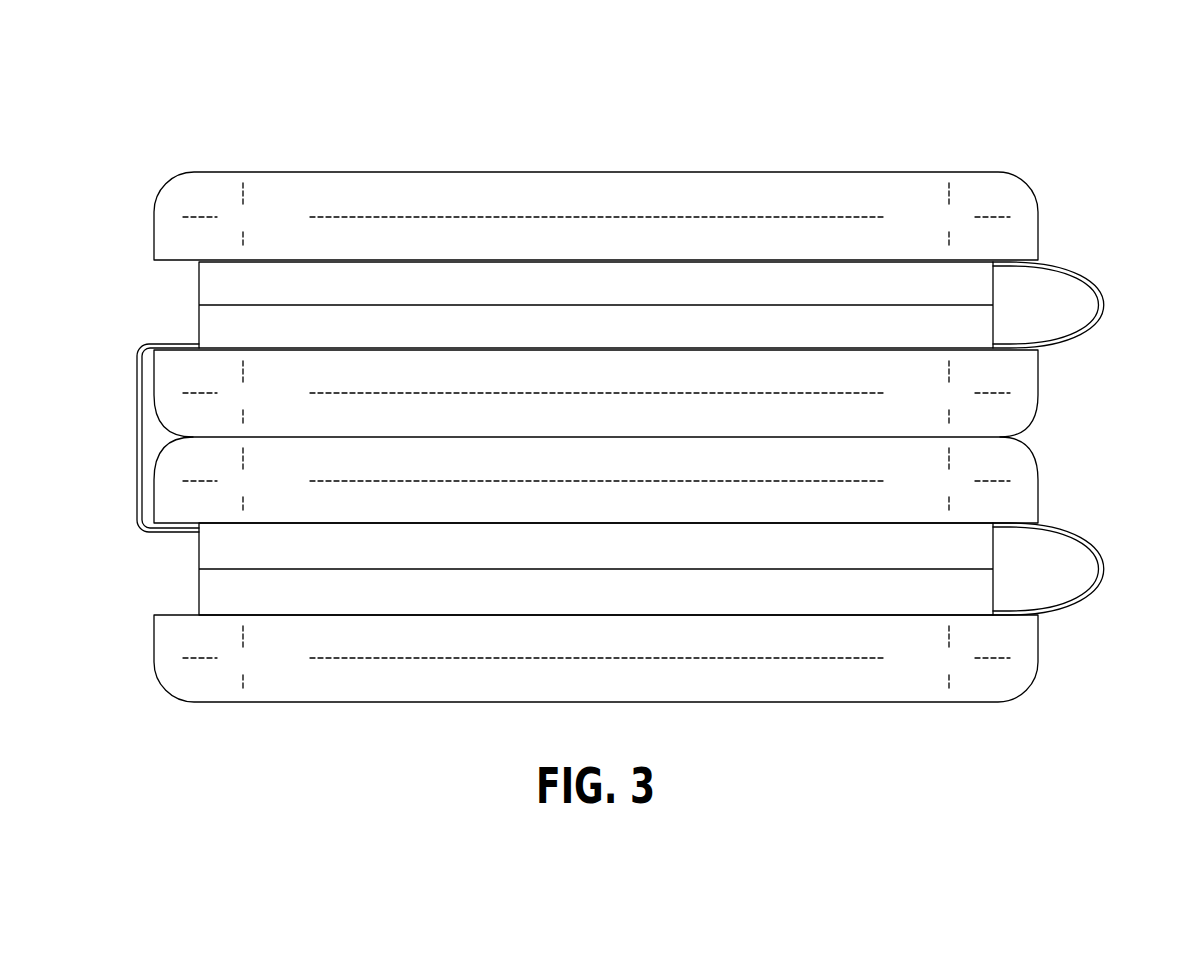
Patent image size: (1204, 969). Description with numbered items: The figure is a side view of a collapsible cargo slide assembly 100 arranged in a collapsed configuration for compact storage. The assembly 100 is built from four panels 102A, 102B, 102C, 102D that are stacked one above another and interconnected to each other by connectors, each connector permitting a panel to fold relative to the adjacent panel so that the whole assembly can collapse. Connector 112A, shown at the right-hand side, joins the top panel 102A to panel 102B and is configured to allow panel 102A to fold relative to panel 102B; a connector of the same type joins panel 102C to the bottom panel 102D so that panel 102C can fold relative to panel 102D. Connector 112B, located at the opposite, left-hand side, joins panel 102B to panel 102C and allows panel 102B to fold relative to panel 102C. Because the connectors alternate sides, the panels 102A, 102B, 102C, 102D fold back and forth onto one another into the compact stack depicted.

The assembly 100 is at (108, 74).
The panel 102A is at (825, 160).
The panel 102B is at (1056, 378).
The panel 102C is at (1056, 493).
The panel 102D is at (1056, 644).
The connector 112A is at (1093, 290).
The connector 112B is at (1093, 557).